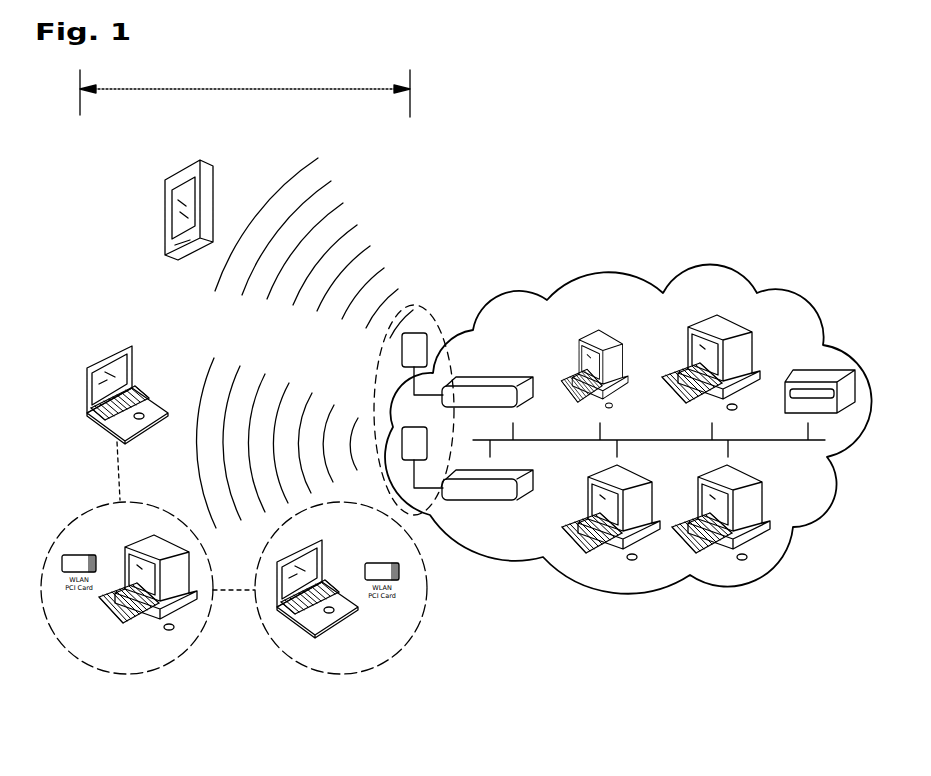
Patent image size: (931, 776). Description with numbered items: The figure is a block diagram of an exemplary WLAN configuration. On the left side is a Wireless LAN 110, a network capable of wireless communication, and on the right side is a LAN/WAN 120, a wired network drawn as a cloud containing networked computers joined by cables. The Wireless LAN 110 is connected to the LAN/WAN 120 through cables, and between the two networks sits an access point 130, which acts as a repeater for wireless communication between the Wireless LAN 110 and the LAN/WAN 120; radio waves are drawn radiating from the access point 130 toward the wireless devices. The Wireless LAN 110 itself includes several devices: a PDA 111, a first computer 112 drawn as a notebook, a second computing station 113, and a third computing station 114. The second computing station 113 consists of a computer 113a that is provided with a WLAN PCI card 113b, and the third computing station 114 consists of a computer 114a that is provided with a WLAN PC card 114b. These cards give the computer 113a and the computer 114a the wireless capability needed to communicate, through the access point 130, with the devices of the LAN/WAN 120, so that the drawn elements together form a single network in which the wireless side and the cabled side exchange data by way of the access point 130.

The Wireless LAN 110 is at (245, 92).
The PDA 111 is at (165, 213).
The first computer 112 is at (108, 355).
The second computing station 113 is at (127, 609).
The computer 113a is at (163, 540).
The WLAN PCI card 113b is at (82, 553).
The third computing station 114 is at (366, 617).
The computer 114a is at (290, 622).
The WLAN PC card 114b is at (400, 571).
The LAN/WAN 120 is at (628, 417).
The access point 130 is at (433, 320).